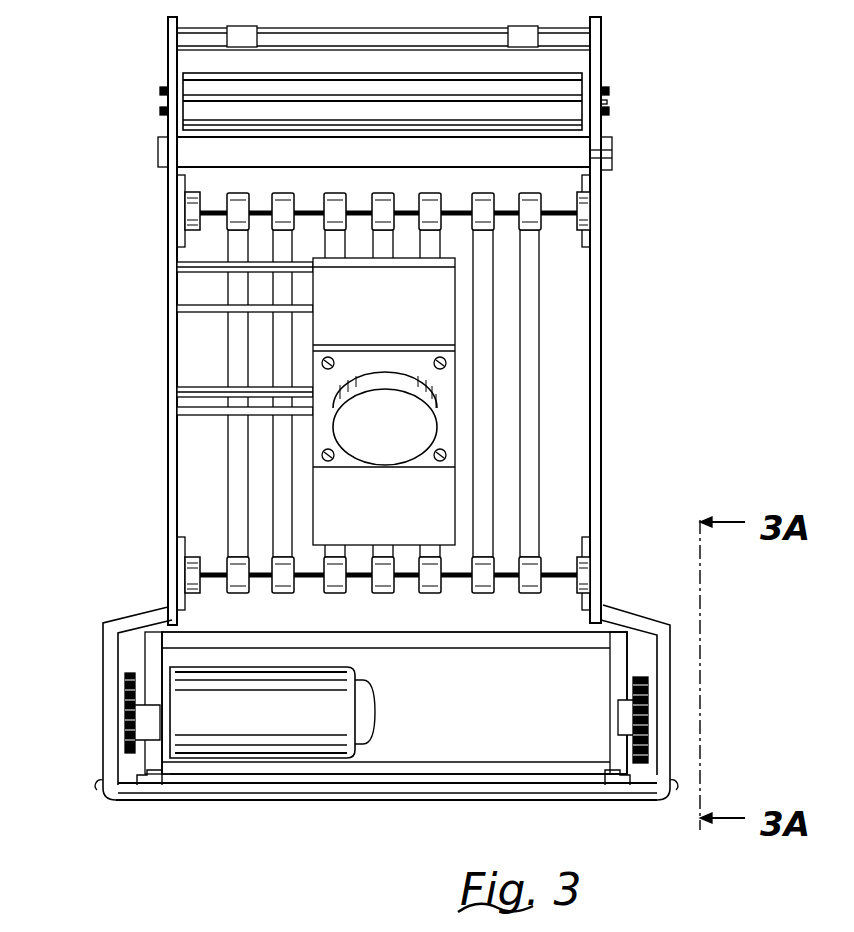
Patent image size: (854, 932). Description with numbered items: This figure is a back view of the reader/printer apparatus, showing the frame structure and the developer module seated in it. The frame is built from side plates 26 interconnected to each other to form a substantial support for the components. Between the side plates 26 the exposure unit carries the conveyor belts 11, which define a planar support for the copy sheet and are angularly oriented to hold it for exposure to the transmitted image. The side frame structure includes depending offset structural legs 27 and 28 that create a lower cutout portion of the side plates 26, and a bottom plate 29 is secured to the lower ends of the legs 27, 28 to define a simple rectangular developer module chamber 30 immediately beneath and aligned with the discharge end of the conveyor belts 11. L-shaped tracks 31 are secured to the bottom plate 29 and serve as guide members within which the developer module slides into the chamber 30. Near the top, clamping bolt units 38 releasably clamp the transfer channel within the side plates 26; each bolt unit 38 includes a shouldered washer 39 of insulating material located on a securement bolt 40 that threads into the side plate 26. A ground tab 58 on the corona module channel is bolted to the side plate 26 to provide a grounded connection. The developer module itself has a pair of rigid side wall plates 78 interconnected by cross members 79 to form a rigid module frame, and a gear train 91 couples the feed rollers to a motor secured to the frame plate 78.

The conveyor belts 11 is at (272, 487).
The side plates 26 is at (168, 432).
The structural leg 27 is at (103, 715).
The structural leg 28 is at (670, 671).
The bottom plate 29 is at (413, 790).
The developer module chamber 30 is at (519, 632).
The L-shaped tracks 31 is at (158, 790).
The clamping bolt units 38 is at (163, 111).
The shouldered washer 39 is at (188, 112).
The securement bolt 40 is at (609, 113).
The ground tab 58 is at (604, 170).
The side wall plates 78 is at (125, 665).
The cross members 79 is at (452, 760).
The gear train 91 is at (350, 677).